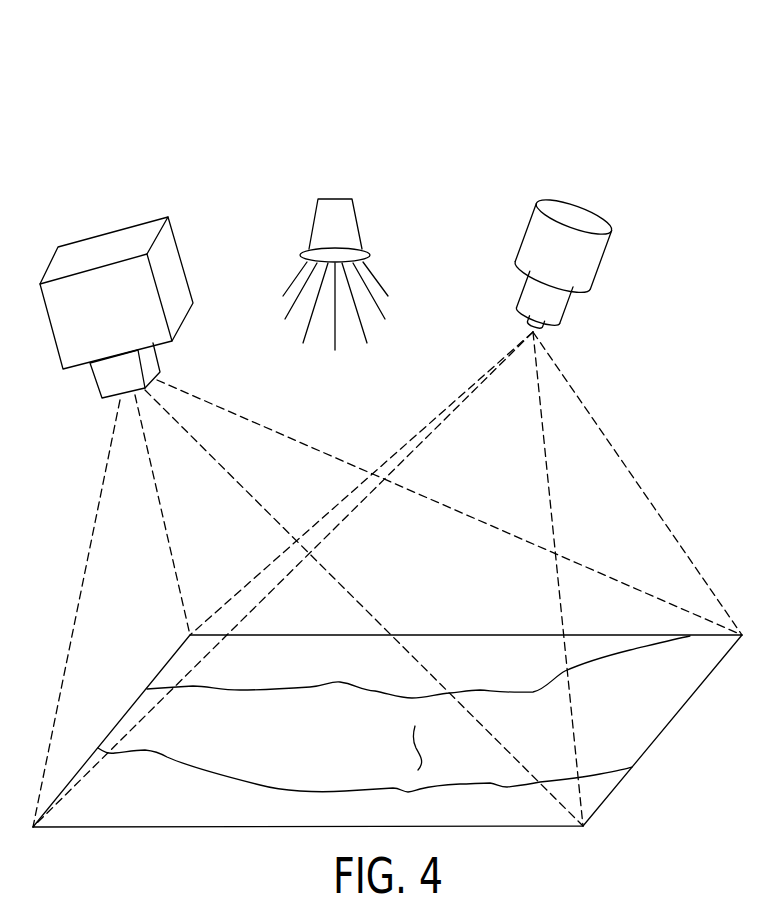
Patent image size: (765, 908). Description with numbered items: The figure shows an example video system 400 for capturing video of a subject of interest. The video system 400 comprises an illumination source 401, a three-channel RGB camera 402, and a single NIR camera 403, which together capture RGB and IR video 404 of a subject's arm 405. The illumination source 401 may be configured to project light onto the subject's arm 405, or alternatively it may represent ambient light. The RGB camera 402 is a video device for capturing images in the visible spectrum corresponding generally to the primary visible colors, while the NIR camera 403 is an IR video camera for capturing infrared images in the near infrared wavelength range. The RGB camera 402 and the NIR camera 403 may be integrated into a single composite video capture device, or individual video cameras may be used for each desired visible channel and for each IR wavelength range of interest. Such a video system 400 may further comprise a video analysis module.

The video system 400 is at (694, 80).
The illumination source 401 is at (337, 198).
The 3-channel RGB camera 402 is at (162, 204).
The single NIR camera 403 is at (592, 200).
The RGB and IR video 404 is at (645, 720).
The subject's arm 405 is at (165, 757).